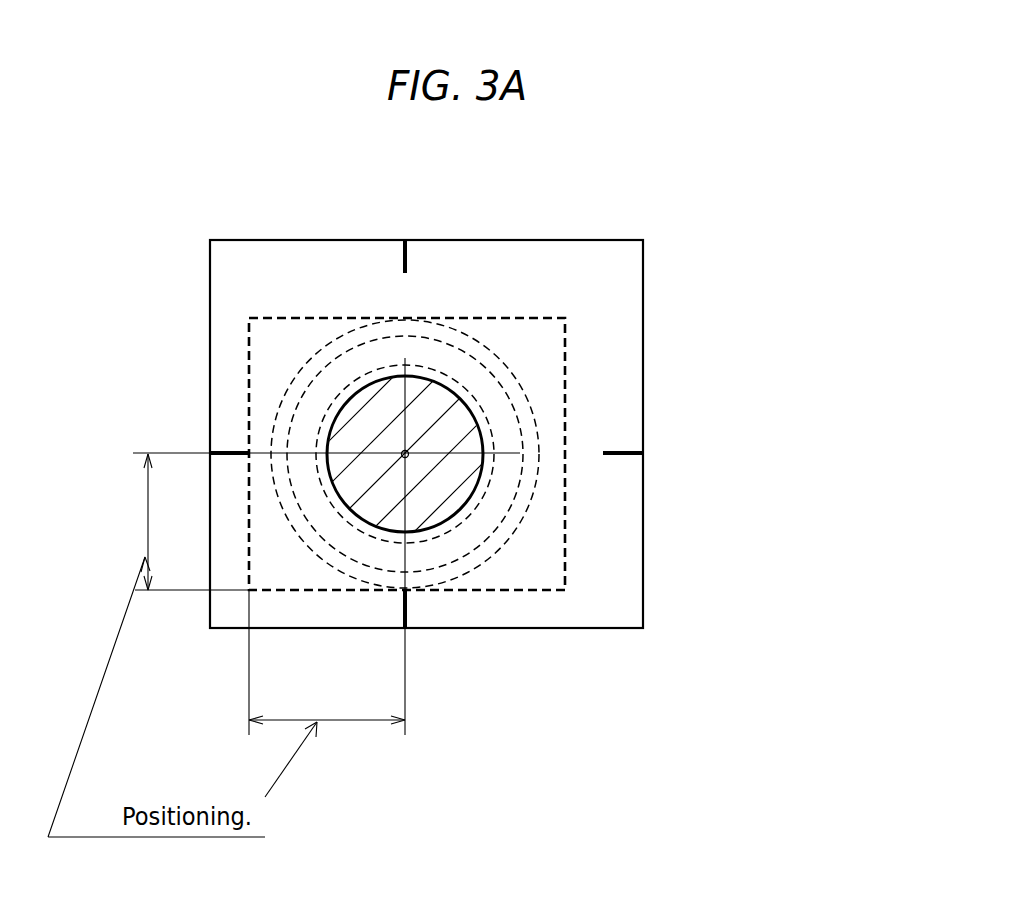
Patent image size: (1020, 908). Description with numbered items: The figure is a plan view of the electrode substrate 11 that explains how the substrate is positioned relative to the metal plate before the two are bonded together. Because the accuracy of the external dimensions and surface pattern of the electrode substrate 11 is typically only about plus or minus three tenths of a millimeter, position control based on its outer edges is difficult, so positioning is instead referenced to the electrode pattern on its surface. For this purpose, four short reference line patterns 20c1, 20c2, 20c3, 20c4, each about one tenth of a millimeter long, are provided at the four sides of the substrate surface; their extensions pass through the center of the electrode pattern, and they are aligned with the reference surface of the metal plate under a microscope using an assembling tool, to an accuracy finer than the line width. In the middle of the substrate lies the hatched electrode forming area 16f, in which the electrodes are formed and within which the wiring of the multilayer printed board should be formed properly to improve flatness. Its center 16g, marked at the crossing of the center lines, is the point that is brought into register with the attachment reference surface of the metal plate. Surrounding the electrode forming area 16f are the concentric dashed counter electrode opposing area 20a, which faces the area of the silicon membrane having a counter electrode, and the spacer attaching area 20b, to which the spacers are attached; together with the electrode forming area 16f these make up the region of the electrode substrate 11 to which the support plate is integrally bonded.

The electrode substrate 11 is at (617, 587).
The electrode forming area 16f is at (478, 430).
The center of electrode forming area 16g is at (407, 451).
The counter electrode opposing area 20a is at (442, 536).
The spacer attaching area 20b is at (463, 565).
The reference line pattern 20c1 is at (618, 446).
The reference line pattern 20c2 is at (402, 608).
The reference line pattern 20c3 is at (236, 452).
The reference line pattern 20c4 is at (407, 252).